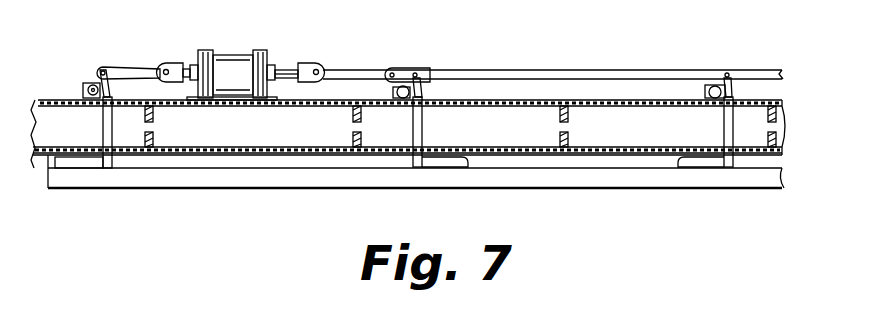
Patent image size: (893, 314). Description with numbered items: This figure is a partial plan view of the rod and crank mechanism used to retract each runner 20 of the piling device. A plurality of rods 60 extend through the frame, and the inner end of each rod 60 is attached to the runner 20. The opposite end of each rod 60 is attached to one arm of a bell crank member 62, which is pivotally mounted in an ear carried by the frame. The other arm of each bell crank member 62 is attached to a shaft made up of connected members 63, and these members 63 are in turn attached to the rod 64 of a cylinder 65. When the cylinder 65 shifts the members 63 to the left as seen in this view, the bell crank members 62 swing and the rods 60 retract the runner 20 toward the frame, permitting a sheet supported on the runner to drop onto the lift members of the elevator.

The runner 20 is at (218, 182).
The rods 60 is at (102, 115).
The bell crank member 62 is at (92, 82).
The connected members 63 is at (133, 68).
The rod 64 is at (185, 65).
The cylinder 65 is at (235, 50).